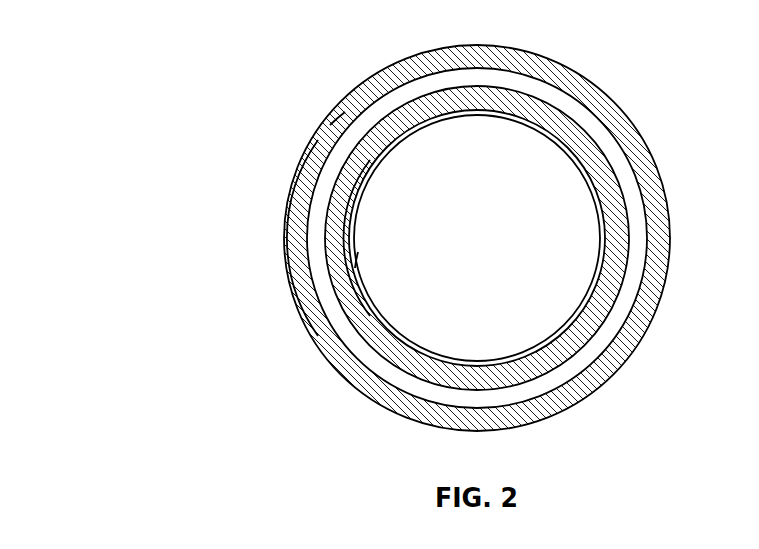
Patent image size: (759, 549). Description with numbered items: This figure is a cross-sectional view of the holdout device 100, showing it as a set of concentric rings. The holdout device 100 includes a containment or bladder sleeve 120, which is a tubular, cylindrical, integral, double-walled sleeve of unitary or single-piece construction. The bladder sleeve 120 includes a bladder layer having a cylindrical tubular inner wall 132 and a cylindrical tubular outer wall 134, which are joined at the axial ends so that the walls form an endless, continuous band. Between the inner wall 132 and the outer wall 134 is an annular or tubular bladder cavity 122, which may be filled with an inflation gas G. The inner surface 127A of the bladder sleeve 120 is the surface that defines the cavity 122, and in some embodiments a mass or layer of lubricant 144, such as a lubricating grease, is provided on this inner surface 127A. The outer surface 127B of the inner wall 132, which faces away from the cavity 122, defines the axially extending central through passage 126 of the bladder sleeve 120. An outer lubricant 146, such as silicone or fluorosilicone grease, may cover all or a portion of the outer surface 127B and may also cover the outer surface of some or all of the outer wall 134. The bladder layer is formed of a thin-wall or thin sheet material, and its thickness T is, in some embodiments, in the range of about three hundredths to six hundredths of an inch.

The holdout device 100 is at (283, 58).
The bladder sleeve 120 is at (560, 56).
The bladder cavity 122 is at (582, 120).
The central through passage 126 is at (498, 249).
The inner surface 127A is at (338, 140).
The outer surface 127B is at (362, 288).
The inner wall 132 is at (418, 367).
The outer wall 134 is at (600, 372).
The lubricant 144 is at (323, 188).
The outer lubricant 146 is at (357, 293).
The inflation gas G is at (626, 217).
The thickness T is at (680, 218).